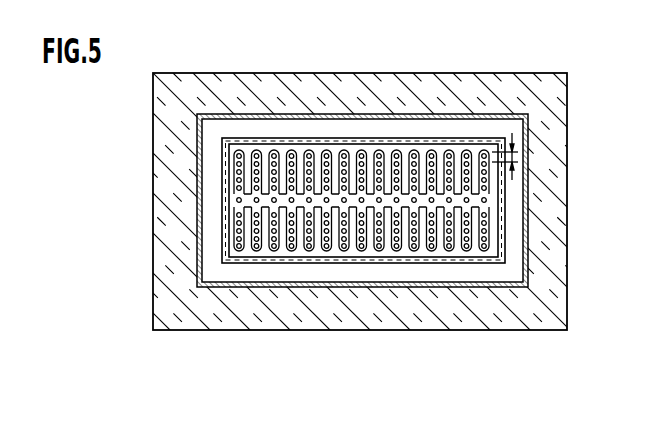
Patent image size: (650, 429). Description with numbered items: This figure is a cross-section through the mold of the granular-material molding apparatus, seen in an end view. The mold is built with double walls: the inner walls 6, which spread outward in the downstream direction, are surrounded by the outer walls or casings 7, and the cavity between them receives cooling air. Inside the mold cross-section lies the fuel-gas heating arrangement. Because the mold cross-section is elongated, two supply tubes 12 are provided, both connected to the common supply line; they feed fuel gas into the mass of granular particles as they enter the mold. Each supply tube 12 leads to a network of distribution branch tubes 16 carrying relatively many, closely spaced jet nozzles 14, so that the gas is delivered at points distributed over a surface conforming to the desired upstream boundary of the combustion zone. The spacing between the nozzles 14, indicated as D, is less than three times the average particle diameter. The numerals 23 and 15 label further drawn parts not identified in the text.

The housing block 23 is at (498, 90).
The outer walls or casings 7 is at (212, 113).
The inner walls 6 is at (247, 138).
The jet nozzles 14 is at (340, 150).
The lower electrode fingers 15 is at (493, 235).
The distribution branch tubes 16 is at (403, 145).
The supply tube 12 is at (488, 200).
The finger spacing D is at (518, 153).